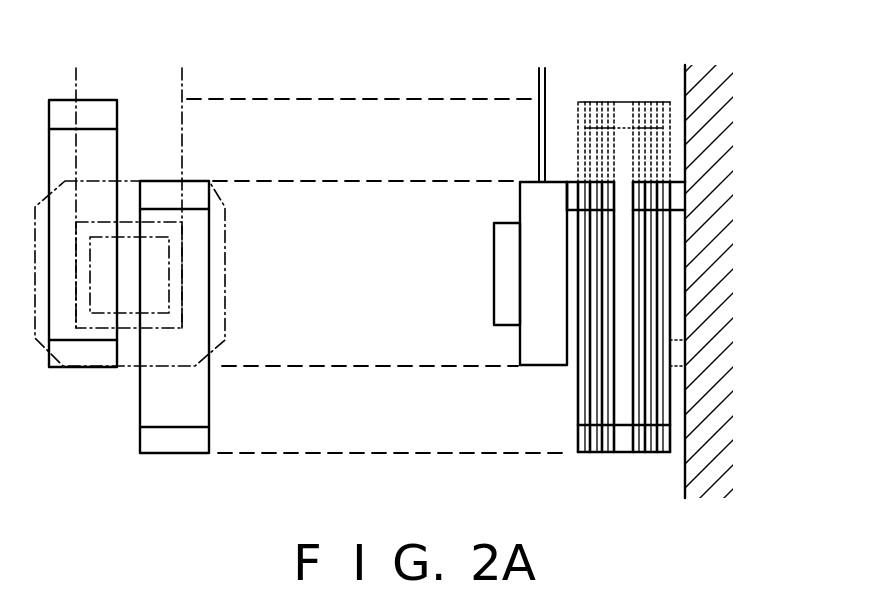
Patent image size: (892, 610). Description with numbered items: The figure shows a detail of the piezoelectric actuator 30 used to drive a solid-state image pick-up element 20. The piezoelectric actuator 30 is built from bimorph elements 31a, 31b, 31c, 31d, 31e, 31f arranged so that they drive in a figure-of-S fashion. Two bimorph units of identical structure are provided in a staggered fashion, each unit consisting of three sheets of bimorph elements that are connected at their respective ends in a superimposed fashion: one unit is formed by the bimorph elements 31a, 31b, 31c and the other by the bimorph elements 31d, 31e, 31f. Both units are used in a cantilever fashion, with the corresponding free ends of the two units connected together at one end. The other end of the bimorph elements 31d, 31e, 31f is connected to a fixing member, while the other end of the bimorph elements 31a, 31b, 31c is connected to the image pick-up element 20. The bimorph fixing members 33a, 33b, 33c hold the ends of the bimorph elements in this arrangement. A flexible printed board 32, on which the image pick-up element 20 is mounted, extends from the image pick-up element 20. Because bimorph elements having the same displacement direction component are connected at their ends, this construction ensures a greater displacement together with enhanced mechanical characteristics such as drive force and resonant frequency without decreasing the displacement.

The solid-state image pick-up element 20 is at (520, 343).
The piezoelectric actuator 30 is at (678, 83).
The bimorph element 31a is at (578, 390).
The bimorph element 31b is at (600, 420).
The bimorph element 31c is at (600, 408).
The bimorph element 31d is at (635, 238).
The bimorph element 31e is at (647, 260).
The bimorph element 31f is at (667, 298).
The flexible printed board 32 is at (555, 68).
The bimorph fixing member 33a is at (573, 193).
The bimorph fixing member 33b is at (625, 442).
The bimorph fixing member 33c is at (680, 192).